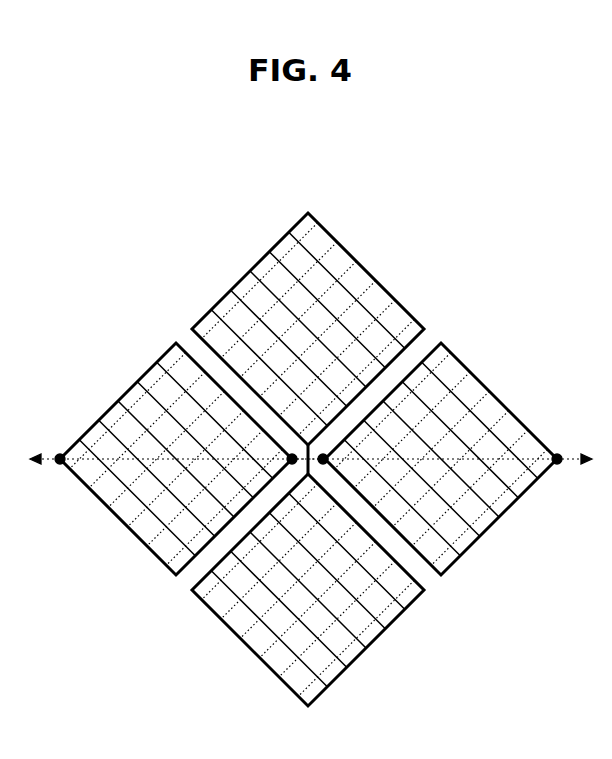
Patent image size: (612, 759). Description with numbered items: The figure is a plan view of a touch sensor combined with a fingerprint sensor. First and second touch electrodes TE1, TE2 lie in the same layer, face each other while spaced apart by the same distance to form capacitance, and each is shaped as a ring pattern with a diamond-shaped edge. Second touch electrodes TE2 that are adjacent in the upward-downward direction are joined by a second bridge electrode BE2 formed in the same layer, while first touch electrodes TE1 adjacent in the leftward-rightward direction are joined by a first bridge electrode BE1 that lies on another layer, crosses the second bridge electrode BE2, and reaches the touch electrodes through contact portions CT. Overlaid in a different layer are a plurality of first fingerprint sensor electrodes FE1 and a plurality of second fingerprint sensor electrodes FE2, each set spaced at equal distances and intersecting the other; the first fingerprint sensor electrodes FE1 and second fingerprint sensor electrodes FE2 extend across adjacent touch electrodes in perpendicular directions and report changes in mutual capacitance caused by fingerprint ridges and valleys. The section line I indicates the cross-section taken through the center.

The first touch electrode TE1 is at (150, 370).
The second touch electrode TE2 is at (262, 258).
The first fingerprint sensor electrode FE1 is at (378, 280).
The second fingerprint sensor electrode FE2 is at (130, 430).
The first bridge electrode BE1 is at (300, 470).
The second bridge electrode BE2 is at (322, 455).
The contact portion CT is at (288, 455).
The section line I-I' I is at (308, 474).